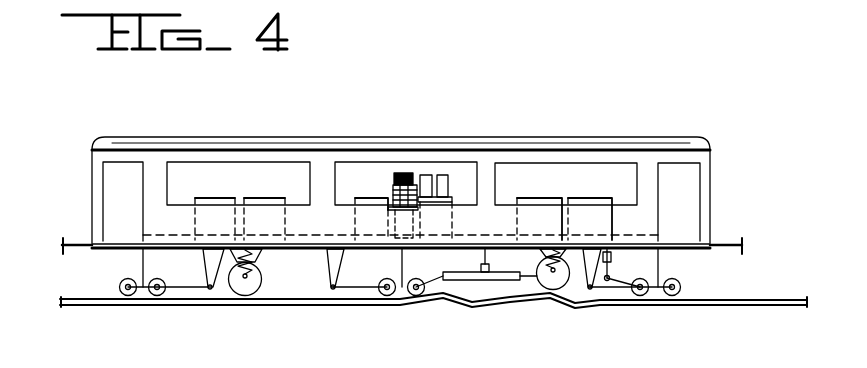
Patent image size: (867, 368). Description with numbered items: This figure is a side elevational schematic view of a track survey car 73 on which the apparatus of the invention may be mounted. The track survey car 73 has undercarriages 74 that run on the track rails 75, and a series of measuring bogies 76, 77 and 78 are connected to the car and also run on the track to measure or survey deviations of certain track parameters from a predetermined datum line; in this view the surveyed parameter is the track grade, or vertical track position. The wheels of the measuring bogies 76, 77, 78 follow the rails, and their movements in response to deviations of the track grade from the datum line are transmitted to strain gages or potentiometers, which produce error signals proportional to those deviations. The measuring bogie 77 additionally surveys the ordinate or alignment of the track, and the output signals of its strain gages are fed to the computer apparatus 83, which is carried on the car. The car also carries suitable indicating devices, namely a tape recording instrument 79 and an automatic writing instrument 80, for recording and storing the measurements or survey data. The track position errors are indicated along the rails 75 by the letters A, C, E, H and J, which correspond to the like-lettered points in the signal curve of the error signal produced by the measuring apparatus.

The track survey car 73 is at (150, 174).
The computer apparatus 83 is at (363, 213).
The tape recording instrument 79 is at (403, 175).
The automatic writing instrument 80 is at (442, 185).
The undercarriages 74 is at (245, 291).
The measuring bogie 76 is at (146, 318).
The measuring bogie 77 is at (399, 317).
The measuring bogie 78 is at (665, 316).
The track rails 75 is at (722, 305).
The track position error point A is at (415, 292).
The track position error point C is at (443, 289).
The track position error point E is at (472, 289).
The track position error point H is at (553, 290).
The track position error point J is at (583, 292).